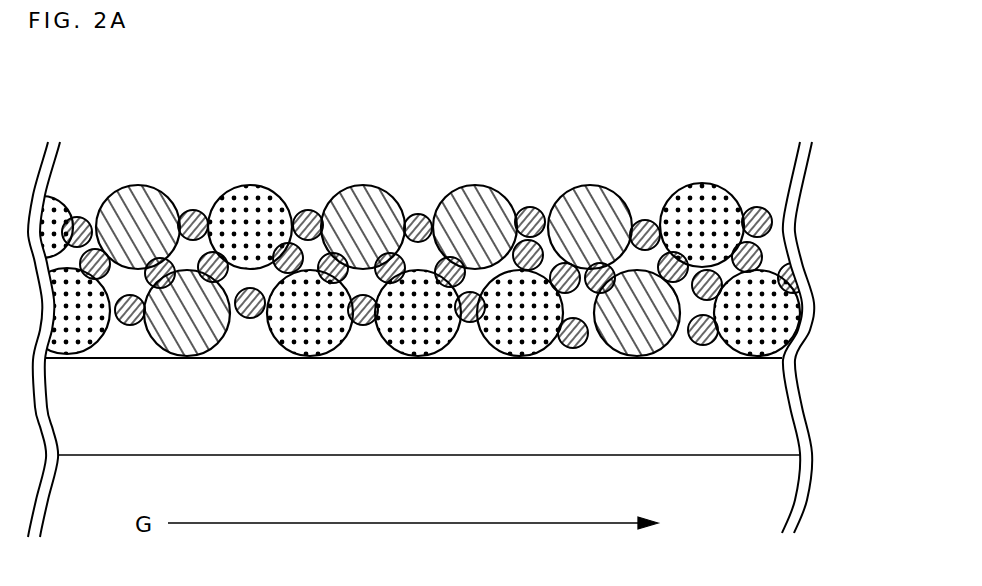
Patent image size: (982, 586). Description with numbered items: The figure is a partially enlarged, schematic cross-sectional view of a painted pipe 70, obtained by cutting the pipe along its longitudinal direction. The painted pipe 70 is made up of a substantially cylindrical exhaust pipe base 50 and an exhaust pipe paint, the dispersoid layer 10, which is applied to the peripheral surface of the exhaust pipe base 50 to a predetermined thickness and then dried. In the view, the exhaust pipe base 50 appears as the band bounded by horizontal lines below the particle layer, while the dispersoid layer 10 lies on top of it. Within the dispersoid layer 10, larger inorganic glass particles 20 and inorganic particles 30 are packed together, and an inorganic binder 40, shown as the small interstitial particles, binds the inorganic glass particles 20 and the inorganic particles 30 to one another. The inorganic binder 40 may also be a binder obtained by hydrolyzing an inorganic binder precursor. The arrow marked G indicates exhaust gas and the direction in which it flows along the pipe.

The dispersoid layer 10 is at (409, 222).
The inorganic glass particles 20 is at (138, 188).
The inorganic particles 30 is at (255, 187).
The inorganic binder 40 is at (193, 198).
The exhaust pipe base 50 is at (409, 330).
The painted pipe 70 is at (491, 306).